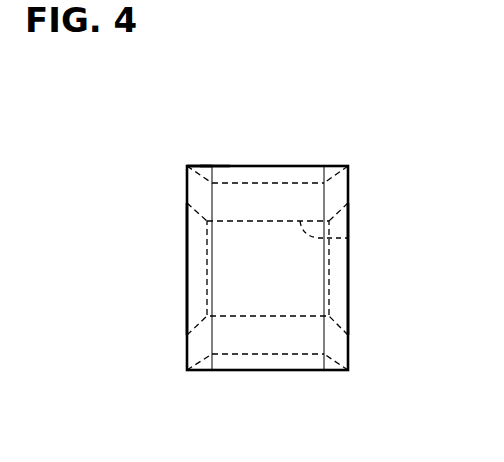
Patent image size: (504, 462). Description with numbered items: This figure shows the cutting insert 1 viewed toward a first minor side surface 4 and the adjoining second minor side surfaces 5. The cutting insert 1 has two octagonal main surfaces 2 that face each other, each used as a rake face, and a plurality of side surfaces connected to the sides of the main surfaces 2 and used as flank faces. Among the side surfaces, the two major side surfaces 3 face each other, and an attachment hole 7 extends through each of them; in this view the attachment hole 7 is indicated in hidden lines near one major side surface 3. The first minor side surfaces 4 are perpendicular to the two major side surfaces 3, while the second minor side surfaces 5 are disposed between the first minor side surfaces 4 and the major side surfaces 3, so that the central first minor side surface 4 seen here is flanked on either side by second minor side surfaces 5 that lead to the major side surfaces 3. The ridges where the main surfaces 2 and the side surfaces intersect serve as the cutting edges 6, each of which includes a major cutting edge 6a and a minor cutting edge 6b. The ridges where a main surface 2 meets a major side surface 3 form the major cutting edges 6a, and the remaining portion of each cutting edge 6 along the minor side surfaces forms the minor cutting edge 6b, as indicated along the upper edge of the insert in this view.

The cutting insert 1 is at (355, 185).
The main surface 2 is at (268, 166).
The major side surface 3 is at (187, 245).
The first minor side surface 4 is at (282, 343).
The second minor side surface 5 is at (193, 308).
The cutting edge 6 is at (238, 109).
The major cutting edge 6a is at (188, 166).
The minor cutting edge 6b is at (203, 166).
The attachment hole 7 is at (348, 238).